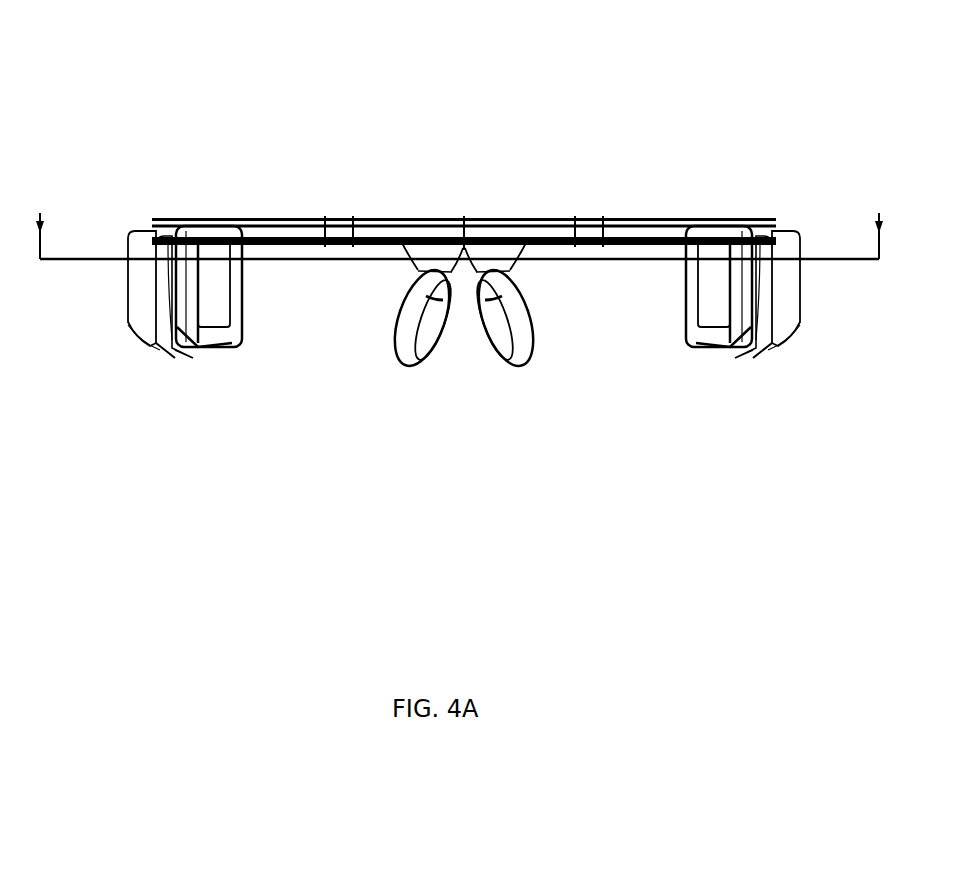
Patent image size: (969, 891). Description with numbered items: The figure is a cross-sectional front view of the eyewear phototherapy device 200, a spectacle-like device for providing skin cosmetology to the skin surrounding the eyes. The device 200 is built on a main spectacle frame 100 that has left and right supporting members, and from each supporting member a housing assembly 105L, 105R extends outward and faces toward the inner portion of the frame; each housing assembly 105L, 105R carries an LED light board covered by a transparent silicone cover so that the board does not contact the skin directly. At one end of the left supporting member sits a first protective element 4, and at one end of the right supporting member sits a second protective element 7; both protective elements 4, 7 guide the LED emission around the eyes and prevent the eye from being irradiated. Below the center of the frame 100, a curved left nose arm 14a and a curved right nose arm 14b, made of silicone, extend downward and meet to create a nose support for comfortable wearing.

The eyewear phototherapy device 200 is at (493, 140).
The main spectacle frame 100 is at (495, 223).
The right housing assembly 105R is at (127, 288).
The left housing assembly 105L is at (803, 288).
The second protective element 7 is at (237, 300).
The first protective element 4 is at (690, 290).
The curved left nose arm 14a is at (545, 343).
The curved right nose arm 14b is at (383, 343).